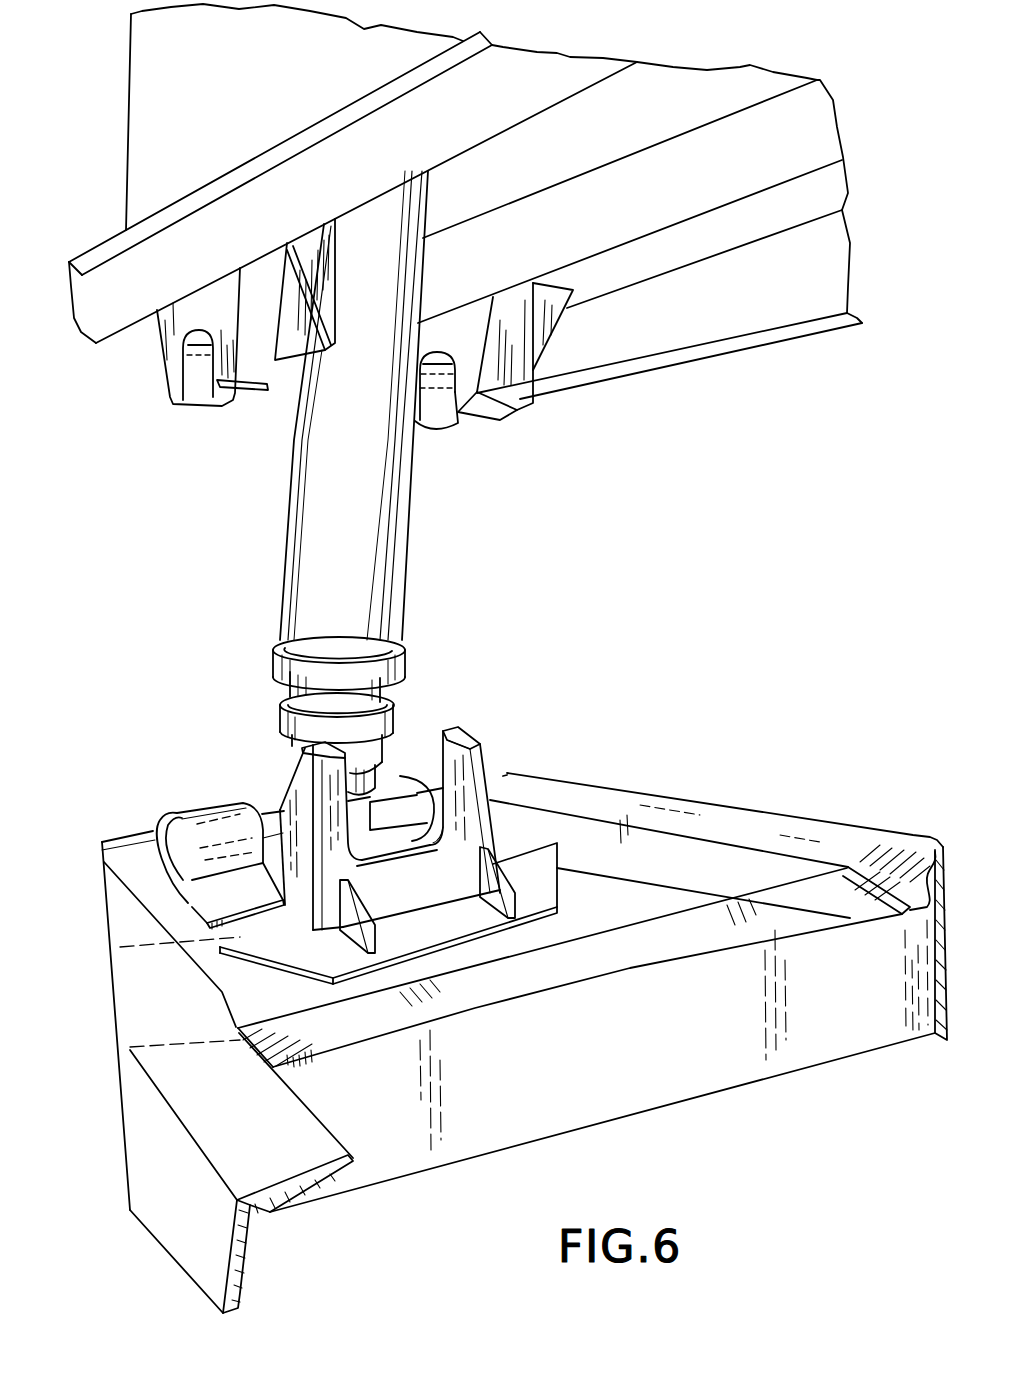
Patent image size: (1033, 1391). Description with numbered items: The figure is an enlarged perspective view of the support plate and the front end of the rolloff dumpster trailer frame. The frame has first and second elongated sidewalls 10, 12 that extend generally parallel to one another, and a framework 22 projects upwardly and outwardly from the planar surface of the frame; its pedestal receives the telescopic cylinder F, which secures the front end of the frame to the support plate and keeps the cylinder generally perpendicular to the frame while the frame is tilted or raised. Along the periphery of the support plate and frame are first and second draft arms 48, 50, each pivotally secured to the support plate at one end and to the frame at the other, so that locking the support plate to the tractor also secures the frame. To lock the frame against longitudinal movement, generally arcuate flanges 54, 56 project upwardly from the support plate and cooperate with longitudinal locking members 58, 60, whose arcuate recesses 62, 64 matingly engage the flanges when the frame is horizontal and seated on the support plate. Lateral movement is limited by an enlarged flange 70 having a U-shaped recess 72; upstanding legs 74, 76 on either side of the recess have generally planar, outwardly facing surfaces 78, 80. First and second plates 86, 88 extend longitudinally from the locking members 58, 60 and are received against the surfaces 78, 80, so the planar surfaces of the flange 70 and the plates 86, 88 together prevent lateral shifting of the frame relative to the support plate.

The first elongated sidewall 10 is at (103, 314).
The second elongated sidewall 12 is at (755, 300).
The framework 22 is at (366, 44).
The first draft arm 48 is at (177, 973).
The second draft arm 50 is at (677, 820).
The arcuate flange 54 is at (170, 830).
The arcuate flange 56 is at (408, 773).
The longitudinal locking member 58 is at (173, 367).
The longitudinal locking member 60 is at (517, 407).
The arcuate recess 62 is at (198, 385).
The arcuate recess 64 is at (438, 410).
The enlarged flange 70 is at (487, 792).
The U-shaped recess 72 is at (427, 833).
The upstanding leg 74 is at (312, 782).
The upstanding leg 76 is at (470, 728).
The planar outwardly facing surface 78 is at (313, 910).
The planar outwardly facing surface 80 is at (503, 840).
The first plate 86 is at (303, 336).
The second plate 88 is at (505, 355).
The telescopic cylinder F is at (360, 513).